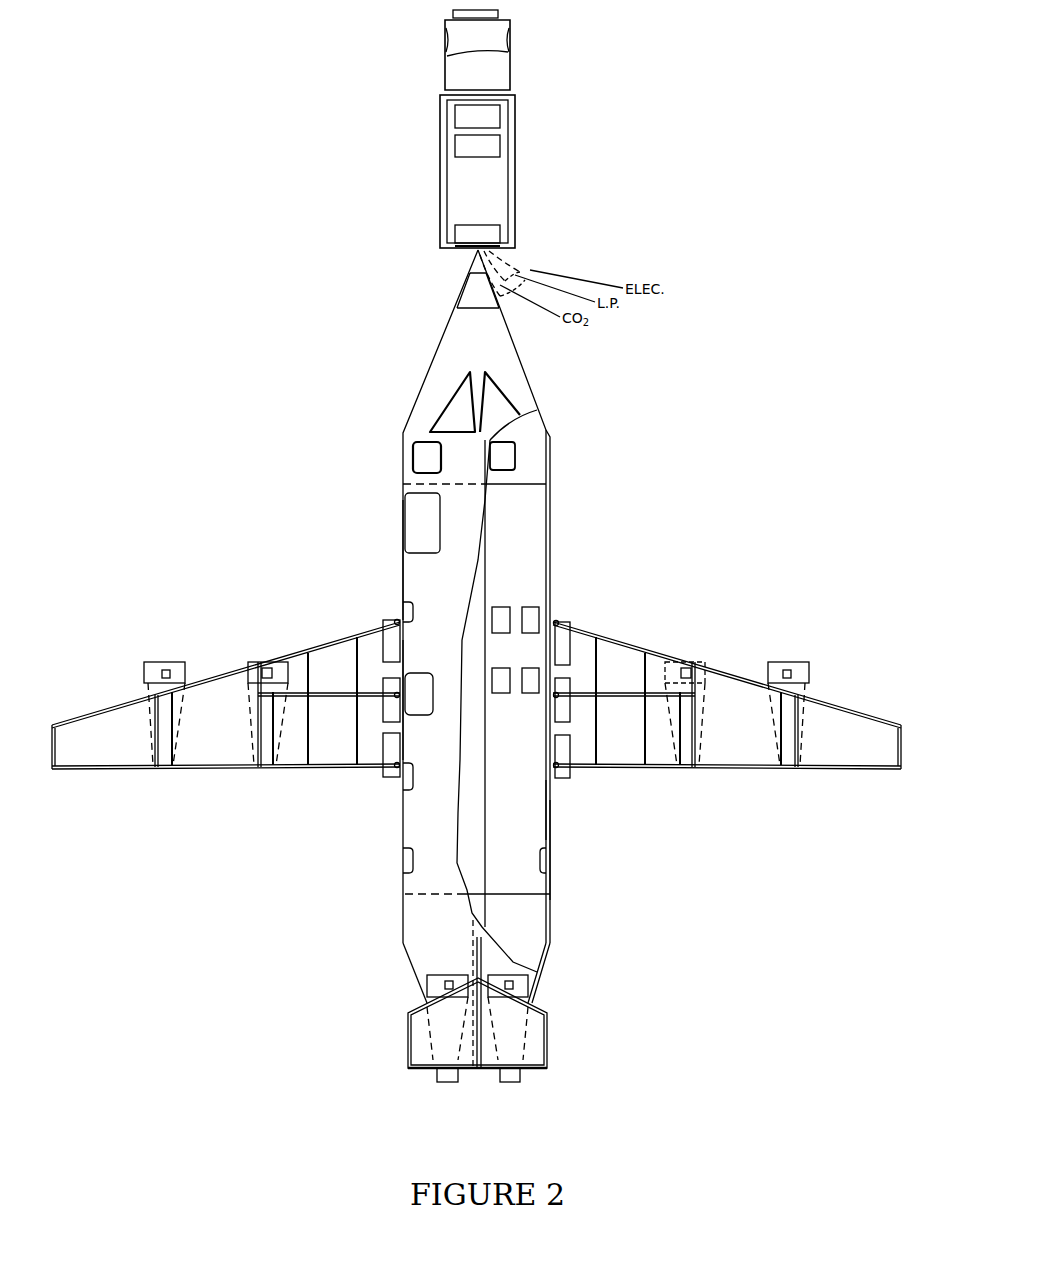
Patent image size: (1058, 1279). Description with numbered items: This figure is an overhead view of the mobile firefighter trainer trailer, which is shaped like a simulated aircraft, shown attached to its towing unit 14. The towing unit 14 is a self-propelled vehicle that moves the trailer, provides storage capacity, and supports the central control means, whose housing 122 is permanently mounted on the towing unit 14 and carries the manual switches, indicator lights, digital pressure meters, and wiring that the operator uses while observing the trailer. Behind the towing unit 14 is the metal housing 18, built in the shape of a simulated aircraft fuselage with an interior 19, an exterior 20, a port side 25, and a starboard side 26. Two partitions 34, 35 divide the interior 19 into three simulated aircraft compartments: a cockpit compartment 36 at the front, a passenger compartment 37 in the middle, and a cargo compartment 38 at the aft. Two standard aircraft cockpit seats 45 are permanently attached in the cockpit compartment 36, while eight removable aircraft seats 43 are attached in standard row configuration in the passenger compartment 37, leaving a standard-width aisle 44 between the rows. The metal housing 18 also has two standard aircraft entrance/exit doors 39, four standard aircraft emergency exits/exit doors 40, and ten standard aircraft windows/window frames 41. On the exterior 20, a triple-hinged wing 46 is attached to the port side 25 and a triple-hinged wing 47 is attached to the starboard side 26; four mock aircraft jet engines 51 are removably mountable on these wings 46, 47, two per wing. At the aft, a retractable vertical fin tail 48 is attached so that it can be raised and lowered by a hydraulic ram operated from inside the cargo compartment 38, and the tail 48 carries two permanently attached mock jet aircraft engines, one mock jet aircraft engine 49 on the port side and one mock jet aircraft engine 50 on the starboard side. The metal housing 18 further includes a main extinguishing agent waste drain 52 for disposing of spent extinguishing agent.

The towing unit 14 is at (522, 91).
The housing 122 is at (498, 235).
The cockpit compartment 36 is at (508, 438).
The standard aircraft cockpit seats 45 is at (505, 457).
The partition 34 is at (546, 484).
The interior 19 is at (527, 515).
The aisle 44 is at (480, 606).
The standard aircraft emergency exits/exit doors 40 is at (430, 460).
The standard aircraft entrance/exit doors 39 is at (415, 524).
The metal housing 18 is at (410, 575).
The exterior 20 is at (433, 594).
The removable aircraft seats 43 is at (500, 620).
The standard aircraft windows/window frames 41 is at (405, 862).
The triple-hinged wing 46 is at (330, 660).
The triple-hinged wing 47 is at (727, 805).
The mock aircraft jet engines 51 is at (768, 665).
The passenger compartment 37 is at (527, 803).
The starboard side 26 is at (580, 858).
The port side 25 is at (385, 896).
The cargo compartment 38 is at (532, 905).
The partition 35 is at (550, 895).
The main extinguishing agent waste drain 52 is at (483, 931).
The retractable vertical fin tail 48 is at (480, 1068).
The mock jet aircraft engine 49 is at (440, 1080).
The mock jet aircraft engine 50 is at (525, 1080).